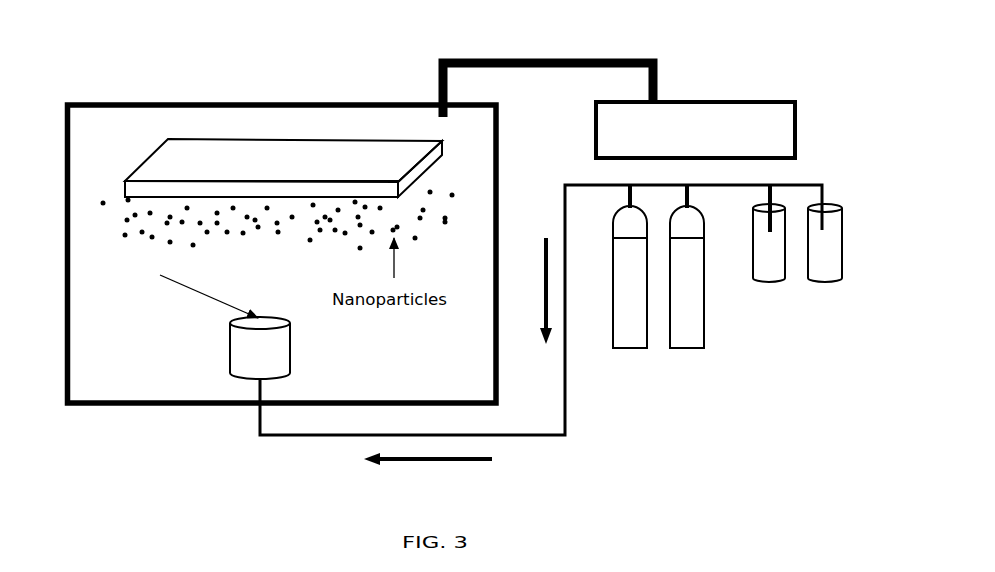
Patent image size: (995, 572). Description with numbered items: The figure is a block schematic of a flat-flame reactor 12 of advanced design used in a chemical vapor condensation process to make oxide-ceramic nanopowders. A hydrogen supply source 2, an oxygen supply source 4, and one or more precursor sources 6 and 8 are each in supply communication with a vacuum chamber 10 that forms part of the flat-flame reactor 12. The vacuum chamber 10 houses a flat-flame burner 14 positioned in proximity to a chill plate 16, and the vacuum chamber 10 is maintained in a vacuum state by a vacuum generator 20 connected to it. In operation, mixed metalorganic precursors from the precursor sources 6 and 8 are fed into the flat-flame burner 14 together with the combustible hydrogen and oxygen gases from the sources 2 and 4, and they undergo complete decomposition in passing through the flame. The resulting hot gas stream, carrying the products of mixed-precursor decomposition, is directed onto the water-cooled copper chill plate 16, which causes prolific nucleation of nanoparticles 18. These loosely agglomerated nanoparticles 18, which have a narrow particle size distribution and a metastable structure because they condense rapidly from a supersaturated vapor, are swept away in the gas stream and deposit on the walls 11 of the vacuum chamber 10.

The hydrogen supply source 2 is at (640, 351).
The oxygen supply source 4 is at (697, 351).
The precursor source 6 is at (752, 249).
The precursor source 8 is at (844, 241).
The vacuum chamber 10 is at (148, 405).
The walls 11 is at (490, 349).
The flat-flame reactor 12 is at (820, 64).
The flat-flame burner 14 is at (230, 339).
The chill plate 16 is at (329, 152).
The nanoparticles 18 is at (123, 181).
The vacuum generator 20 is at (748, 100).